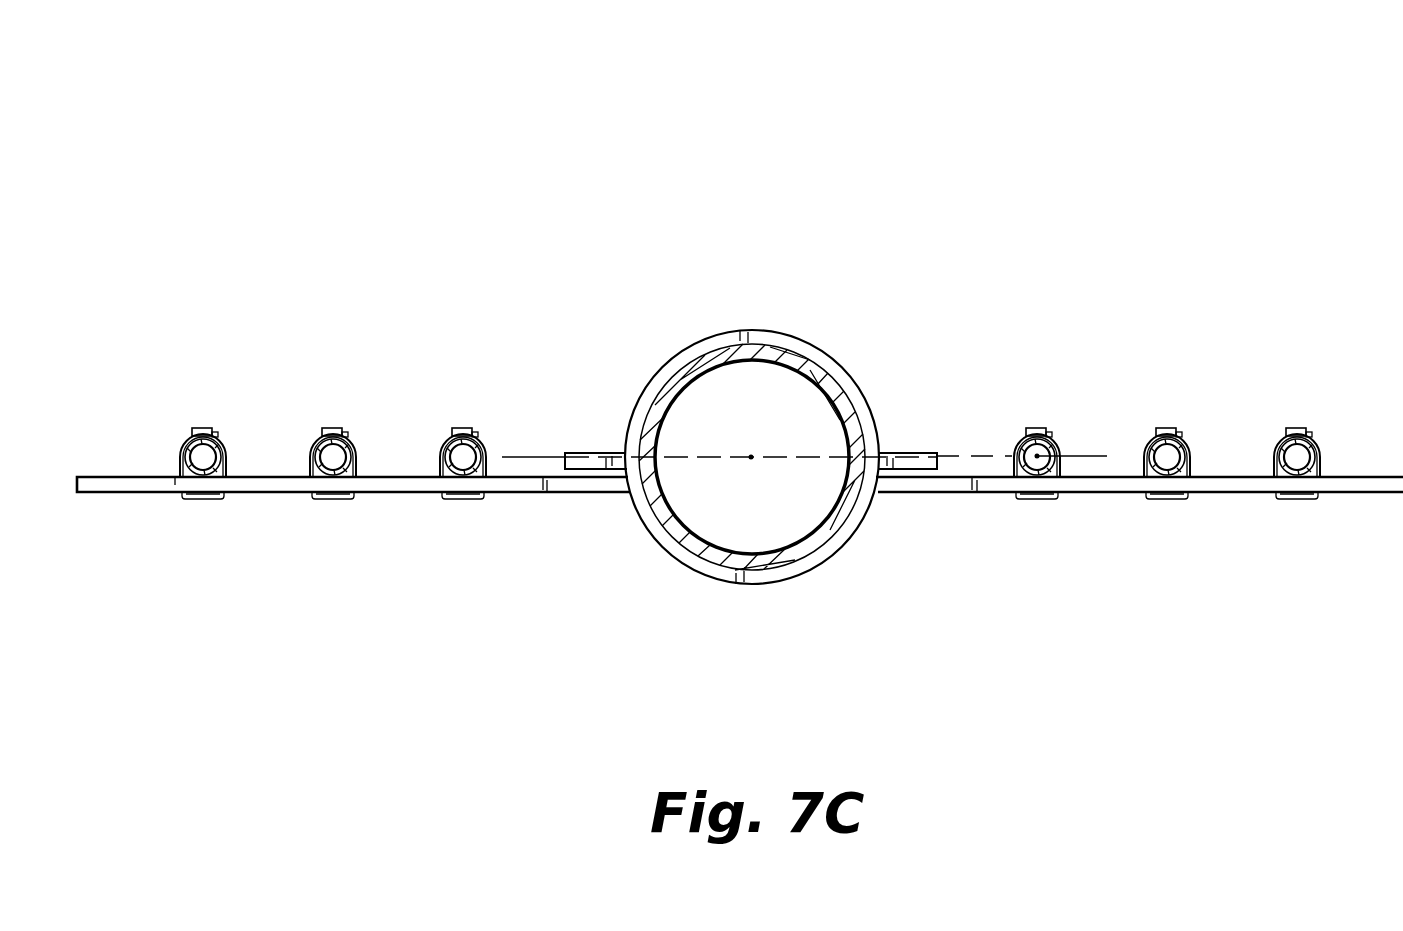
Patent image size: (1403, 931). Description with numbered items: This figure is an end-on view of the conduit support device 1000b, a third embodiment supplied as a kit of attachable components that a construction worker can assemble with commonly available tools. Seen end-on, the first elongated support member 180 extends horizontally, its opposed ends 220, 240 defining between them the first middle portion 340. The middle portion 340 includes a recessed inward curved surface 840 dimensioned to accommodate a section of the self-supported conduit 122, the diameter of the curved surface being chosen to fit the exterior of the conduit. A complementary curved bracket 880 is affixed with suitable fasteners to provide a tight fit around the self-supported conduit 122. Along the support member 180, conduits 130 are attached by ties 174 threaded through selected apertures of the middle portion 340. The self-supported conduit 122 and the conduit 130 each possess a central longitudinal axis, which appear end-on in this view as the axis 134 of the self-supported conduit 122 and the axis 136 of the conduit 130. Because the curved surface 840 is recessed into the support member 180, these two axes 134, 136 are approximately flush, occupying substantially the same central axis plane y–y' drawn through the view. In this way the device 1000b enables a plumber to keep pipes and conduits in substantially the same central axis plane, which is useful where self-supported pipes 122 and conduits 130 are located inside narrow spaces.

The conduit support device 1000b is at (478, 152).
The self-supported conduit 122 is at (800, 332).
The central longitudinal axis a–a' 134 is at (751, 457).
The curved bracket 880 is at (657, 373).
The recessed inward curved surface 840 is at (796, 578).
The conduit 130 is at (1015, 440).
The central longitudinal axis b–b' 136 is at (1037, 428).
The tie 174 is at (1062, 437).
The first opposed end 220 is at (445, 493).
The second opposed end 240 is at (1093, 492).
The first elongated support member 180 is at (907, 492).
The first middle portion 340 is at (590, 493).